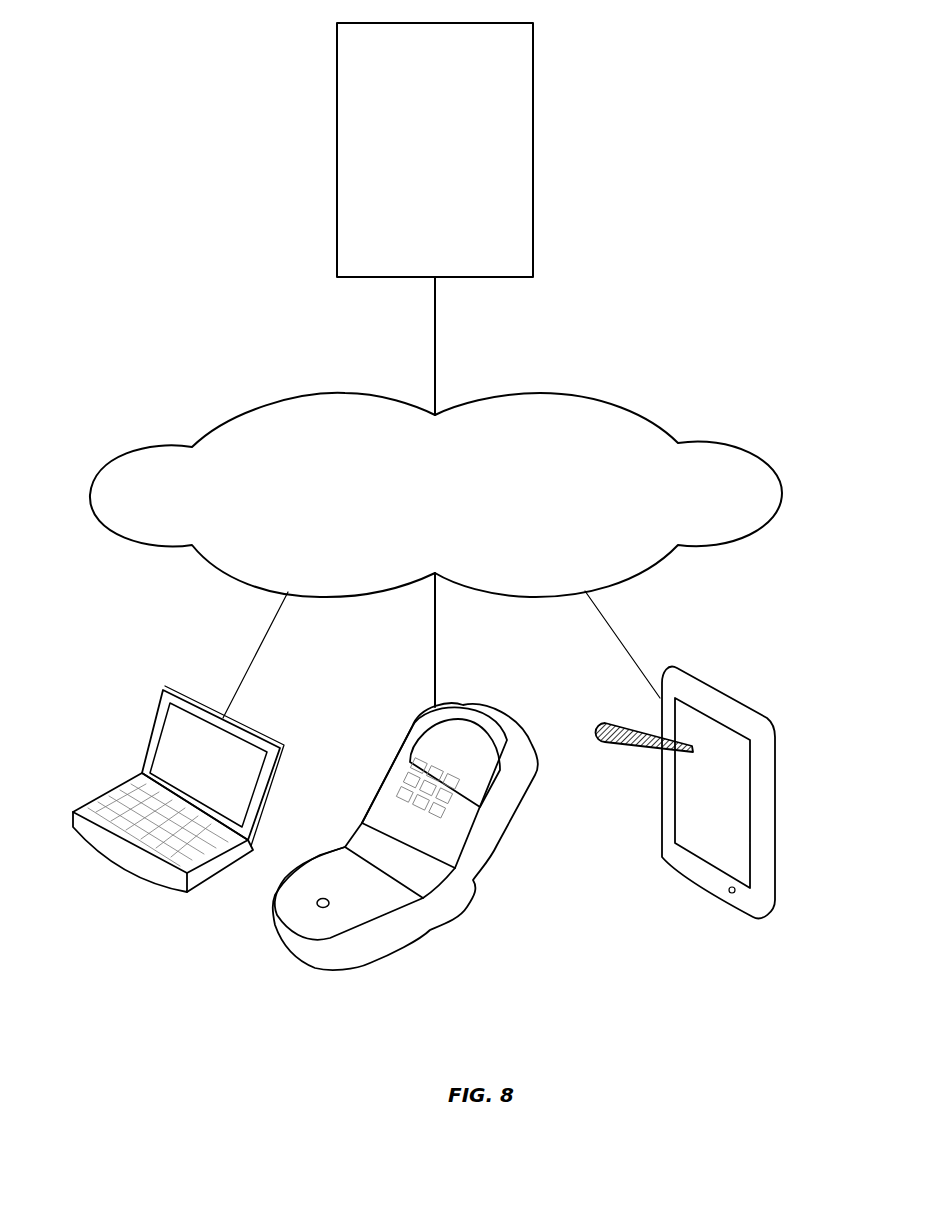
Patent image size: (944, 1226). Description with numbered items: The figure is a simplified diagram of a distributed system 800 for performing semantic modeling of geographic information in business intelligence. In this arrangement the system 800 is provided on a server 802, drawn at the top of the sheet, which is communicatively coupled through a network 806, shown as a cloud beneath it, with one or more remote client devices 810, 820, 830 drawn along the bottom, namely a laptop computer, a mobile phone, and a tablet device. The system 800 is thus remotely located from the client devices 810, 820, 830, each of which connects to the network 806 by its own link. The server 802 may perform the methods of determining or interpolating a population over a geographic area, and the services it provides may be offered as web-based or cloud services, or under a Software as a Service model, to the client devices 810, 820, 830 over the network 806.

The distributed system 800 is at (104, 1014).
The server 802 is at (337, 70).
The network 806 is at (782, 493).
The remote client device 810 is at (257, 737).
The remote client device 820 is at (481, 884).
The remote client device 830 is at (771, 740).